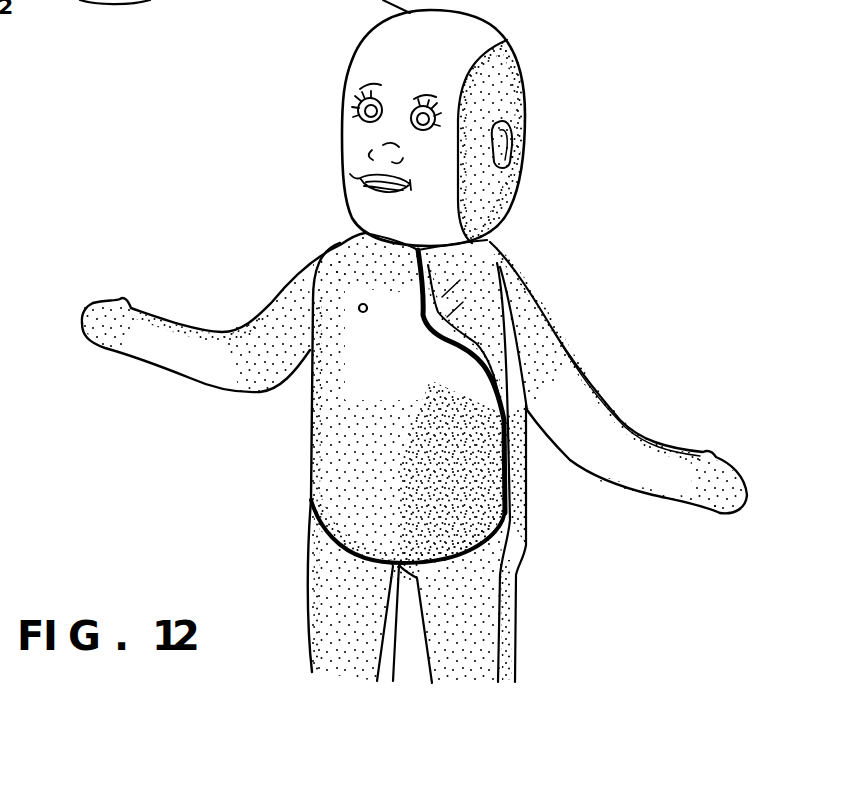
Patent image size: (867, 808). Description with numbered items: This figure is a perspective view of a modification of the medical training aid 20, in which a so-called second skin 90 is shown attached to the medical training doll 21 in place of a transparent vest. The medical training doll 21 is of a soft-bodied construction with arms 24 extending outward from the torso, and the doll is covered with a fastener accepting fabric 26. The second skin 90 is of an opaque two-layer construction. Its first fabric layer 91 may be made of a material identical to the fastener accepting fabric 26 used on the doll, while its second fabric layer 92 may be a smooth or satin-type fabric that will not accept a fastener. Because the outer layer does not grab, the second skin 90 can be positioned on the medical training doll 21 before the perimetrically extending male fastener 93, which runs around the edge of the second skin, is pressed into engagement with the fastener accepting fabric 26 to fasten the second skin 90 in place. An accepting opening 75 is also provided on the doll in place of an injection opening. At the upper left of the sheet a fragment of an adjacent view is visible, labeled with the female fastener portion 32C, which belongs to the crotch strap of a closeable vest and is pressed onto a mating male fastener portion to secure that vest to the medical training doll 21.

The medical training aid 20 is at (218, 158).
The medical training doll 21 is at (535, 555).
The arms 24 is at (170, 320).
The fastener accepting fabric 26 is at (500, 258).
The female fastener portion 32C is at (107, 0).
The accepting opening 75 is at (359, 305).
The second skin 90 is at (350, 480).
The first fabric layer 91 is at (342, 392).
The second fabric layer 92 is at (452, 307).
The perimetrically extending male fastener 93 is at (453, 346).